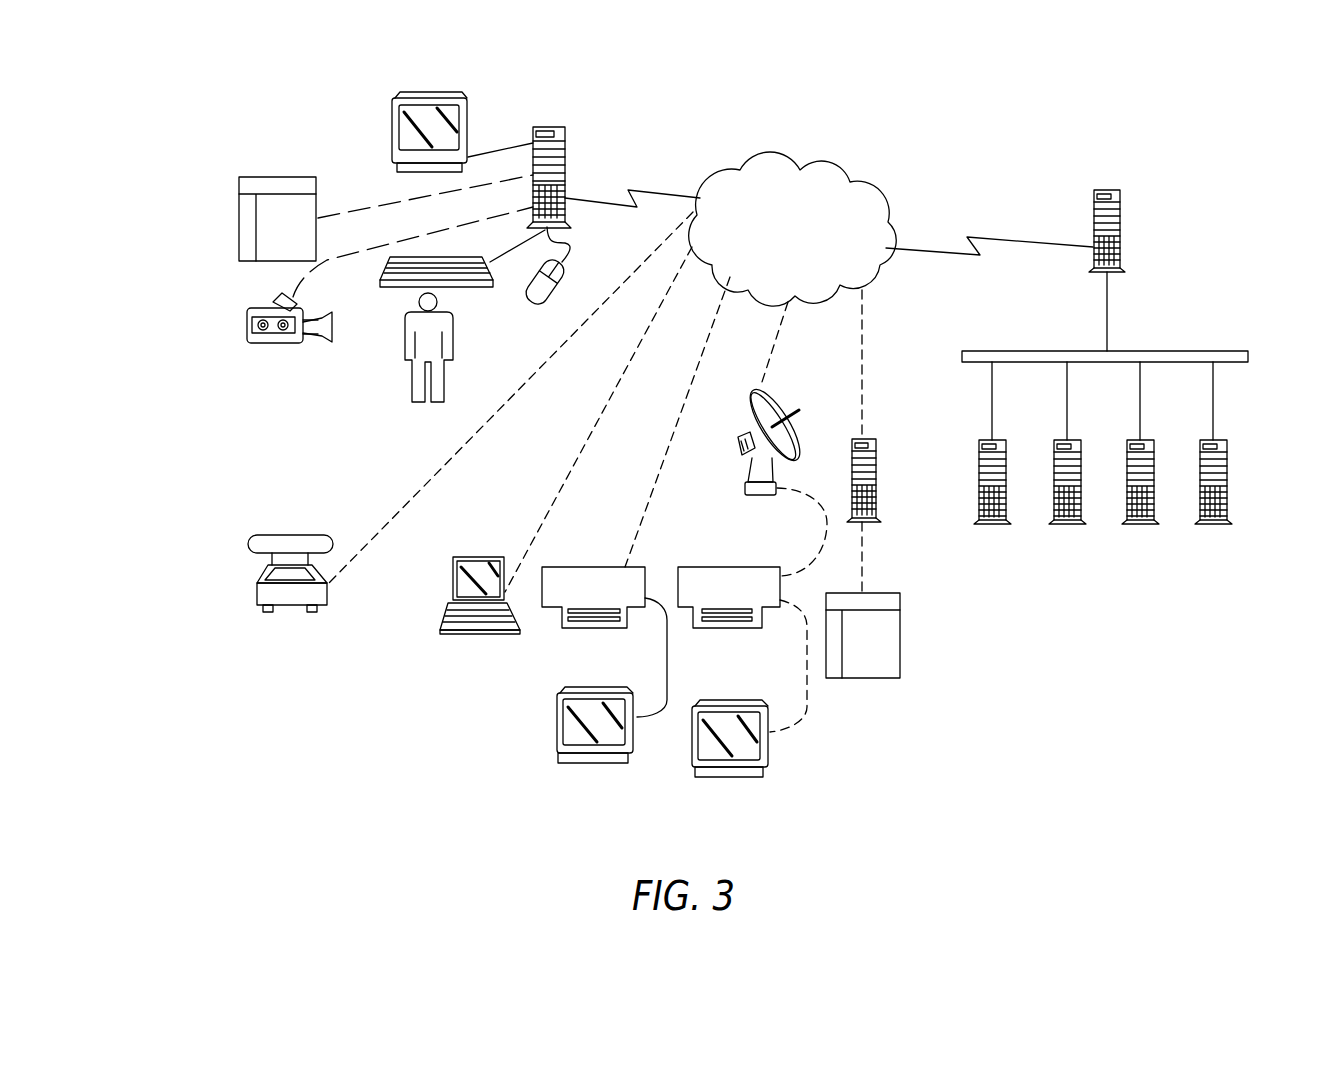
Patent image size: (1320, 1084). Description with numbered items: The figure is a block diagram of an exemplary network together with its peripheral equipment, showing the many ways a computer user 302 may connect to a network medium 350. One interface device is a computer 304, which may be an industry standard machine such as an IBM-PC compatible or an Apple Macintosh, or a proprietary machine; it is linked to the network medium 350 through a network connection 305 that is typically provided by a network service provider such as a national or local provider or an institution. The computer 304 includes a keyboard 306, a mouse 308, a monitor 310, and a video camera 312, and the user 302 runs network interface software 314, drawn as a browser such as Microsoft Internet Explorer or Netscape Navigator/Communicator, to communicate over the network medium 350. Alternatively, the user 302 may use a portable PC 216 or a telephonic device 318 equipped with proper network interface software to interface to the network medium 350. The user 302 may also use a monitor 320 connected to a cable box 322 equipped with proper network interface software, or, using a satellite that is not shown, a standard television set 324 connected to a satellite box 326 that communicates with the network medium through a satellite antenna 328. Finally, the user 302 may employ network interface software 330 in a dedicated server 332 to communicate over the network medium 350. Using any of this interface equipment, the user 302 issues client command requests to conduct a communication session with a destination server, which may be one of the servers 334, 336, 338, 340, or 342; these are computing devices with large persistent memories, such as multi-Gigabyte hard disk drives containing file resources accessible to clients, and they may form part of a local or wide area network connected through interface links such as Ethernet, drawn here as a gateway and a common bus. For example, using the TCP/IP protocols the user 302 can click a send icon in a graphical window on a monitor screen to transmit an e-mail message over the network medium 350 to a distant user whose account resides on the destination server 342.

The portable PC 216 is at (453, 600).
The computer user 302 is at (413, 395).
The computer 304 is at (545, 127).
The network connection 305 is at (628, 138).
The keyboard 306 is at (468, 287).
The mouse 308 is at (573, 260).
The monitor 310 is at (467, 108).
The video camera 312 is at (247, 318).
The network interface software 314 is at (239, 222).
The telephonic device 318 is at (257, 588).
The monitor 320 is at (557, 750).
The cable box 322 is at (593, 567).
The television set 324 is at (768, 760).
The satellite box 326 is at (690, 567).
The satellite antenna 328 is at (772, 397).
The network interface software 330 is at (900, 635).
The dedicated server 332 is at (875, 440).
The server 334 is at (1120, 223).
The server 336 is at (1007, 433).
The server 338 is at (1082, 433).
The server 340 is at (1155, 433).
The destination server 342 is at (1228, 433).
The network medium 350 is at (818, 162).